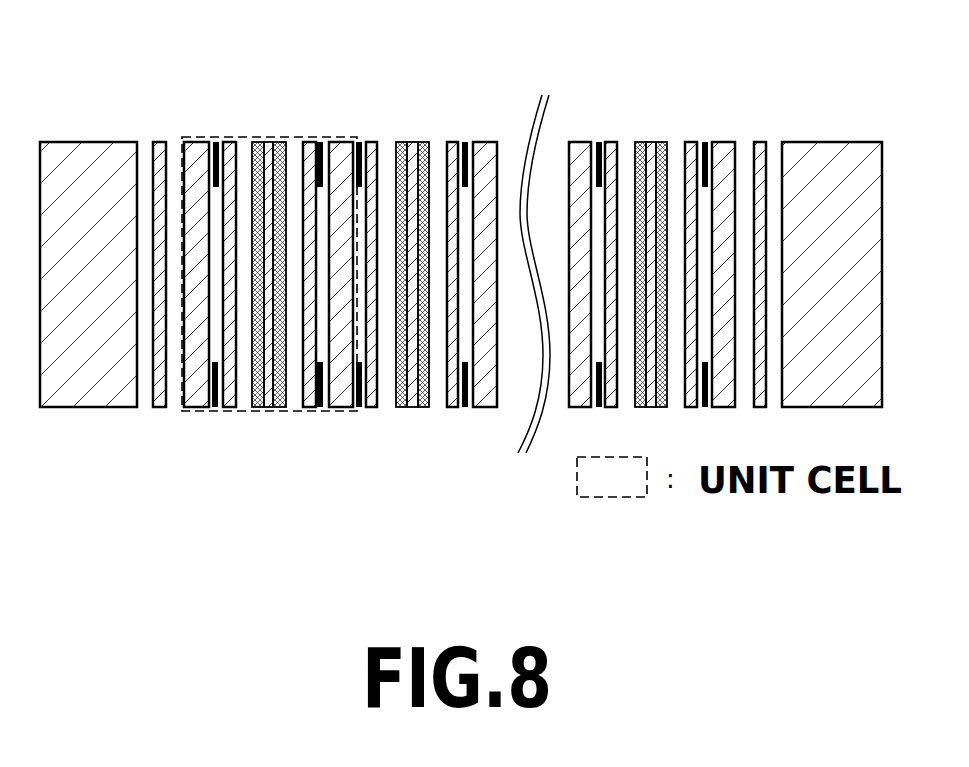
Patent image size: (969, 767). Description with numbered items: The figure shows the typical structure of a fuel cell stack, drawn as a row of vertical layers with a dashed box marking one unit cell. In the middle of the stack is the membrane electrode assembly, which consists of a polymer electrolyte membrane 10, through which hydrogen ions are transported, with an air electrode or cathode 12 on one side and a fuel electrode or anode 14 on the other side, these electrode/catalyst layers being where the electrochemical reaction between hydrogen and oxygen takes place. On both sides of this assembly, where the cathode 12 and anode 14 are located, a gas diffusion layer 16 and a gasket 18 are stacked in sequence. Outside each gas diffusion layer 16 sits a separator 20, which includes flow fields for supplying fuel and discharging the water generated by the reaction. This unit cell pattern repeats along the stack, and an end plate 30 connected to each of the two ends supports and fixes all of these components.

The end plate 30 is at (88, 220).
The separator 20 is at (255, 338).
The gasket 18 is at (283, 221).
The gas diffusion layer 16 is at (292, 217).
The fuel electrode (anode) 14 is at (240, 347).
The polymer electrolyte membrane 10 is at (286, 347).
The air electrode (cathode) 12 is at (316, 333).